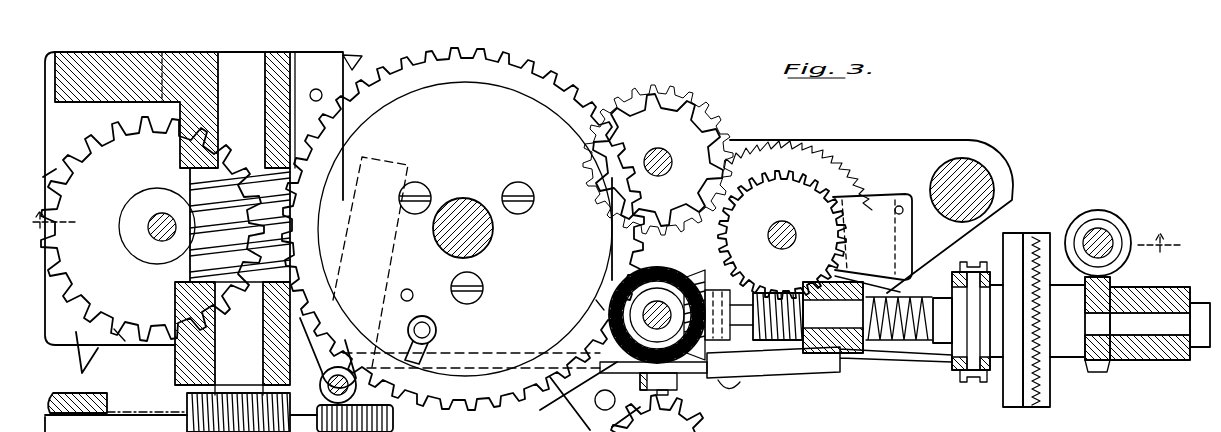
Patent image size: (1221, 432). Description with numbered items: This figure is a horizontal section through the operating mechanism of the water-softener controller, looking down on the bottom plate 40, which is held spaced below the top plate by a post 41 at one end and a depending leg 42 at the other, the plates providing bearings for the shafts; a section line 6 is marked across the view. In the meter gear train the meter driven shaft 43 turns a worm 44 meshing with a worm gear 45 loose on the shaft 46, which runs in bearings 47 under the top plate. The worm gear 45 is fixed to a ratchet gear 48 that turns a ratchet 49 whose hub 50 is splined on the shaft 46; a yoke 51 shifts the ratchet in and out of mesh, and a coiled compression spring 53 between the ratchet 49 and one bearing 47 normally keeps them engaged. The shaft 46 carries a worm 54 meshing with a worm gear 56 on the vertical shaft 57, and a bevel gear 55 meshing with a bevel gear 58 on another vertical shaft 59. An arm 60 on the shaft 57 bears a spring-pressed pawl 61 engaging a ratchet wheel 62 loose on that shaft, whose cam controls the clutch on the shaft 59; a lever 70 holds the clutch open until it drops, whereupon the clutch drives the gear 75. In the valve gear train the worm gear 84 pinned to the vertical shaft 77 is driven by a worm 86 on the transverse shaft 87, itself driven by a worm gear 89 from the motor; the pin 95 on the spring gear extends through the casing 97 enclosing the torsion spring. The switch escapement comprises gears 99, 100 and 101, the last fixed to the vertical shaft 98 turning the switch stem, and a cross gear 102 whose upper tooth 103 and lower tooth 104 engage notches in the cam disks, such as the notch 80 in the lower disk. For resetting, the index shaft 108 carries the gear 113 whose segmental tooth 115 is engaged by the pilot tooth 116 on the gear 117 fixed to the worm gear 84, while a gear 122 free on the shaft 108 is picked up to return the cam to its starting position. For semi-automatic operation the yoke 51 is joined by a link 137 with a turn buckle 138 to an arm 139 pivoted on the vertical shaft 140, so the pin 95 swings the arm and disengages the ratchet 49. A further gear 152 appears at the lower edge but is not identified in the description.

The section line 6- 6 is at (607, 232).
The bottom plate 40 is at (175, 338).
The post 41 is at (992, 186).
The leg 42 is at (72, 72).
The meter driven shaft 43 is at (1106, 236).
The worm 44 is at (1084, 221).
The worm gear 45 is at (1107, 376).
The shaft 46 is at (1135, 313).
The bearings 47 is at (828, 353).
The ratchet gear 48 is at (1043, 388).
The ratchet 49 is at (1006, 386).
The hub 50 is at (957, 335).
The yoke 51 is at (957, 272).
The coiled compression spring 53 is at (895, 341).
The worm 54 is at (781, 343).
The bevel gear 55 is at (699, 286).
The worm gear 56 is at (776, 183).
The vertical shaft 57 is at (784, 226).
The bevel gear 58 is at (592, 305).
The vertical shaft 59 is at (638, 333).
The arm 60 is at (872, 192).
The pawl 61 is at (904, 289).
The ratchet wheel 62 is at (782, 142).
The lever 70 is at (576, 386).
The gear 75 is at (728, 388).
The vertical shaft 77 is at (494, 236).
The notch 80 is at (185, 375).
The worm gear 84 is at (522, 77).
The worm 86 is at (222, 168).
The transverse shaft 87 is at (232, 338).
The worm gear 89 is at (395, 425).
The pin 95 is at (414, 299).
The casing 97 is at (410, 108).
The vertical shaft 98 is at (160, 236).
The gear 99 is at (346, 65).
The gear 100 is at (240, 49).
The gear 101 is at (86, 286).
The cross gear 102 is at (120, 340).
The upper tooth 103 is at (82, 368).
The lower tooth 104 is at (50, 151).
The index shaft 108 is at (668, 175).
The gear 113 is at (698, 118).
The upper segment 115 is at (605, 178).
The pilot tooth 116 is at (430, 349).
The gear 117 is at (510, 352).
The gear 122 is at (670, 92).
The link 137 is at (610, 392).
The turn buckle 138 is at (775, 373).
The arm 139 is at (398, 258).
The vertical shaft 140 is at (356, 392).
The gear 152 is at (666, 413).